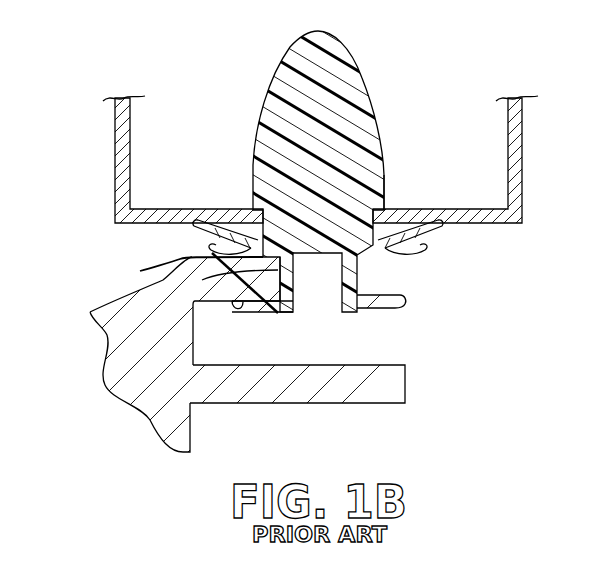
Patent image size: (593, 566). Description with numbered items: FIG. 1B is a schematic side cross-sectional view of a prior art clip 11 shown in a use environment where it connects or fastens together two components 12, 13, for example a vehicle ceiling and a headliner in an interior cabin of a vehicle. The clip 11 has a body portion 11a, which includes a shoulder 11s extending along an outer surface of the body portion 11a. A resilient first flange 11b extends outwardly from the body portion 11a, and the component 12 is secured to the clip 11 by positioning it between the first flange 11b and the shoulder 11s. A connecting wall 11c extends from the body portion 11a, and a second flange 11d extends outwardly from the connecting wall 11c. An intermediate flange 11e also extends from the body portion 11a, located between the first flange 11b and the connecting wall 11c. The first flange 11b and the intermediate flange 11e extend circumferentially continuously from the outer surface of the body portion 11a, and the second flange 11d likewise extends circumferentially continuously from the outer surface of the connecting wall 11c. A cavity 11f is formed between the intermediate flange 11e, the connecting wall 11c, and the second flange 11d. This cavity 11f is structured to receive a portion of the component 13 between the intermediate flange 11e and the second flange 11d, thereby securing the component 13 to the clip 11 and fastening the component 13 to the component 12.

The clip 11 is at (273, 84).
The body portion 11a is at (270, 140).
The shoulder 11s is at (383, 208).
The component 12 is at (116, 148).
The first flange 11b is at (214, 233).
The intermediate flange 11e is at (140, 271).
The connecting wall 11c is at (142, 328).
The second flange 11d is at (275, 313).
The cavity 11f is at (373, 280).
The component 13 is at (366, 390).